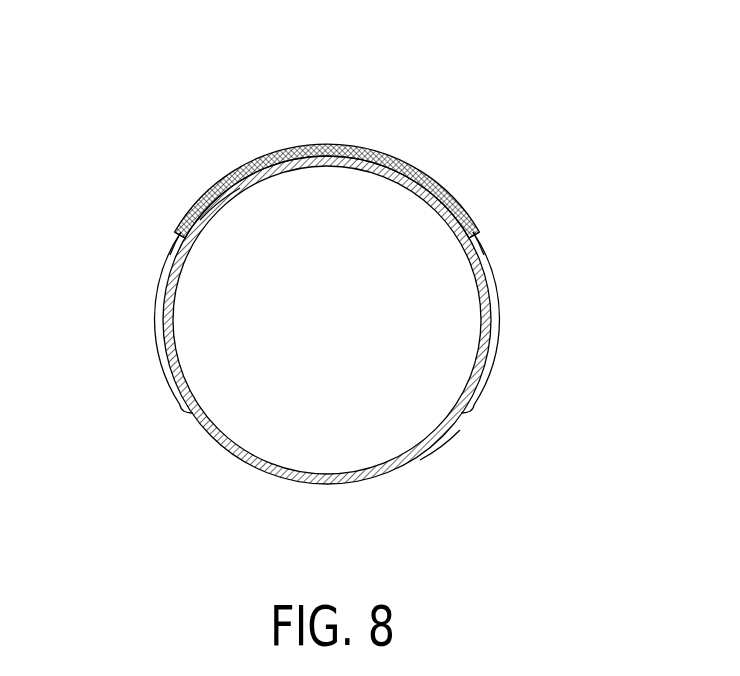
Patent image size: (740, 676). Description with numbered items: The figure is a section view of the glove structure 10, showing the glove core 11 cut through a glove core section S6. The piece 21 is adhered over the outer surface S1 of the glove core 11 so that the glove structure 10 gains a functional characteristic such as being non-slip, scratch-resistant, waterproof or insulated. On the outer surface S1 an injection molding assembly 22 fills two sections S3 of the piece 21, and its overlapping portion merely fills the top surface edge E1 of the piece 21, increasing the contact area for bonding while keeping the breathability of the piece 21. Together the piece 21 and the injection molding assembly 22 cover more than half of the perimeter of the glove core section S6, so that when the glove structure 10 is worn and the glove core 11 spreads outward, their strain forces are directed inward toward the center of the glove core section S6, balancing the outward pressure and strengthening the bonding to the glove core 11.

The glove structure 10 is at (348, 288).
The glove core 11 is at (282, 477).
The piece 21 is at (385, 152).
The injection molding assembly 22 is at (156, 301).
The top surface edge E1 is at (184, 232).
The outer surface S1 is at (446, 440).
The section S3 is at (171, 243).
The glove core section S6 is at (224, 201).